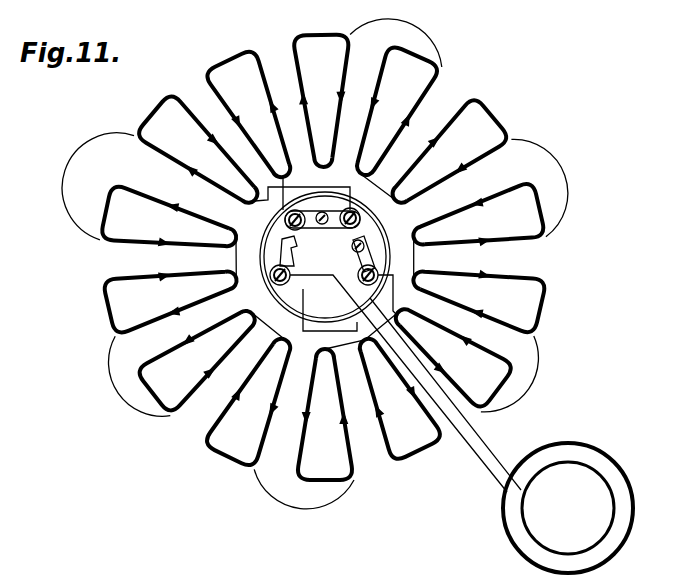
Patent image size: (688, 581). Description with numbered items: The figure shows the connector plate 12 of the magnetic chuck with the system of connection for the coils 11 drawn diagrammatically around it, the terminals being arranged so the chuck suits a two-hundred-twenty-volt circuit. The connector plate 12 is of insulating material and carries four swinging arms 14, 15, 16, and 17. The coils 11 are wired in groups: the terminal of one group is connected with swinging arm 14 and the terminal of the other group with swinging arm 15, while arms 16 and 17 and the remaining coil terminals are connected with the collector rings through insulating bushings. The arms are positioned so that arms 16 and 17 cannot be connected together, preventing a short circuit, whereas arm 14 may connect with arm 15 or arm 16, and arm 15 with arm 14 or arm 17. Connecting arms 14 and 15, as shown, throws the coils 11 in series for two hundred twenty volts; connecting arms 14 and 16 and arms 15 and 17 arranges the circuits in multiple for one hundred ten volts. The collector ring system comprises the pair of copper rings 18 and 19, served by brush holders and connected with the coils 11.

The coils 11 is at (440, 83).
The connector plate 12 is at (283, 293).
The swinging arm 14 is at (314, 226).
The swinging arm 15 is at (336, 226).
The swinging arm 16 is at (283, 256).
The swinging arm 17 is at (360, 262).
The copper ring 18 is at (612, 461).
The copper ring 19 is at (603, 543).